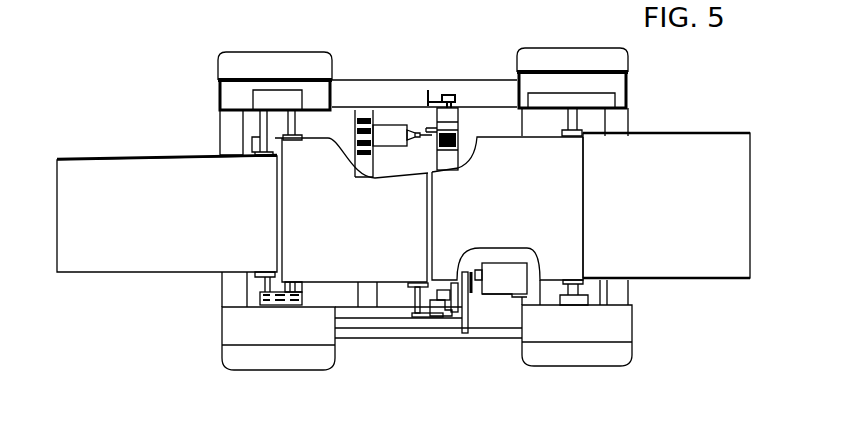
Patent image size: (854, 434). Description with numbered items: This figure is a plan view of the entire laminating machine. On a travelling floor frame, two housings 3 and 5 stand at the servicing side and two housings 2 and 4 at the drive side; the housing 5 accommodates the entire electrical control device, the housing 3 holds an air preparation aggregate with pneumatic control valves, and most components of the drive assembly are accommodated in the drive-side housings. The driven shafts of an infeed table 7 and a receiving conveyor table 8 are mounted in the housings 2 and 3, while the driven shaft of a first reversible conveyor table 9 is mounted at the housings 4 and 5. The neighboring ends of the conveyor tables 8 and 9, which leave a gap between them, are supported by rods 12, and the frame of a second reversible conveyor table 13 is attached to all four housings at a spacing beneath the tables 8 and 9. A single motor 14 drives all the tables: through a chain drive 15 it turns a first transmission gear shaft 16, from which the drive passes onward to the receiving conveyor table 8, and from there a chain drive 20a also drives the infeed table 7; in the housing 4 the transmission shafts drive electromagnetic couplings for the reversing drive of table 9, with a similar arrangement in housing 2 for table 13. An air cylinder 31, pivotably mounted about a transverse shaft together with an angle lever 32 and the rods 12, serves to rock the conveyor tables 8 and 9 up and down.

The housing 2 is at (247, 360).
The housing 3 is at (278, 60).
The housing 4 is at (583, 350).
The housing 5 is at (565, 60).
The infeed table 7 is at (153, 224).
The receiving conveyor table 8 is at (351, 223).
The first reversing conveyor table 9 is at (496, 219).
The rods 12 is at (450, 308).
The second reversing conveyor table 13 is at (655, 216).
The motor 14 is at (497, 285).
The chain drive 15 is at (472, 293).
The first transmission gear shaft 16 is at (365, 326).
The chain drive 20a is at (283, 304).
The air cylinder 31 is at (393, 128).
The angle lever 32 is at (455, 136).